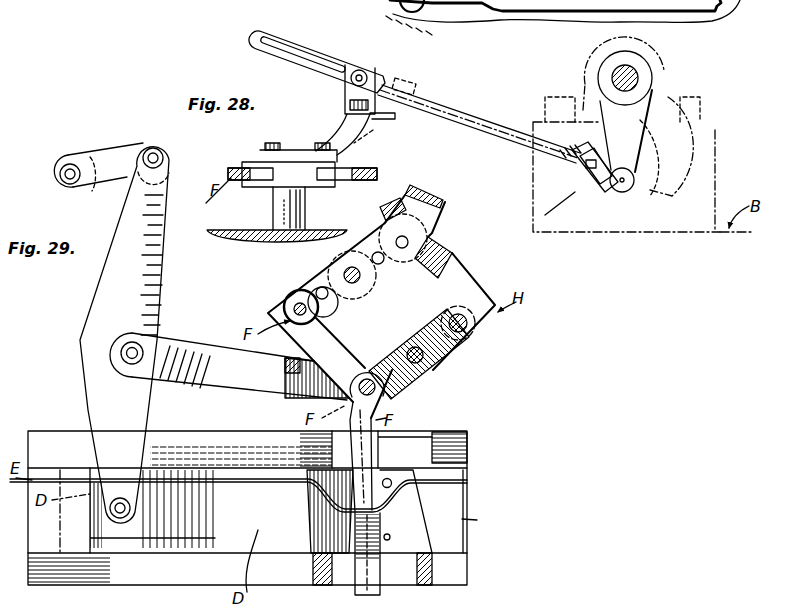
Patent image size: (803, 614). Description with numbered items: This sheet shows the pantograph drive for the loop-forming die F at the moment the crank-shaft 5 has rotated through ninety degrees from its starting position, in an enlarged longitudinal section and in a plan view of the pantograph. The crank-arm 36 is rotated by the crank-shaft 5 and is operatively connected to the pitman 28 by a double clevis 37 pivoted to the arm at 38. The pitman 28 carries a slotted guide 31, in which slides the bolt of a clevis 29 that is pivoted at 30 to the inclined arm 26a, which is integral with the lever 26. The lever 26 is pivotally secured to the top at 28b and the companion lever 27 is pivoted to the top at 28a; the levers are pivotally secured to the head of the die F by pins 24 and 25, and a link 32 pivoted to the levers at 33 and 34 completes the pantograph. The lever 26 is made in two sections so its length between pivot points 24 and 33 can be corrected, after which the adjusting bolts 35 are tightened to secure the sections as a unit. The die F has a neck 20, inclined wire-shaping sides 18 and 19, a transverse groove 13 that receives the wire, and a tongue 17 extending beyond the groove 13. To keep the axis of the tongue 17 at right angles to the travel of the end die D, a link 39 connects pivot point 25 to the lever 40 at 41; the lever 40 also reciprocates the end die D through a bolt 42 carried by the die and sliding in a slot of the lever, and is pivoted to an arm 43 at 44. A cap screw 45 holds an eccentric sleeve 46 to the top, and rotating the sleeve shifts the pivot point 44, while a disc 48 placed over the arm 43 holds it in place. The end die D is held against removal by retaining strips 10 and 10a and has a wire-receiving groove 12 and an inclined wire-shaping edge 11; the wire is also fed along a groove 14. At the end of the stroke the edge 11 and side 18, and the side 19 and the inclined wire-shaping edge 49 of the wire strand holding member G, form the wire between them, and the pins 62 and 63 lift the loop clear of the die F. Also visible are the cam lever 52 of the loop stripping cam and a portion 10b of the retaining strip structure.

In FIG. 28, the crank-shaft 5 is at (611, 75).
In FIG. 29, the retaining strip 10 is at (42, 431).
In FIG. 29, the retaining strip 10a is at (88, 582).
In FIG. 29, the base portion 10b is at (200, 606).
In FIG. 29, the inclined wire-shaping edge 11 is at (302, 500).
In FIG. 29, the wire-receiving groove 12 is at (242, 483).
In FIG. 29, the groove 13 is at (382, 506).
In FIG. 29, the groove 14 is at (462, 479).
In FIG. 29, the tongue 17 is at (379, 579).
In FIG. 29, the inclined wire-shaping side 18 is at (348, 468).
In FIG. 29, the inclined wire-shaping side 19 is at (368, 454).
In FIG. 29, the neck 20 is at (394, 420).
In FIG. 29, the pin 24 is at (296, 305).
In FIG. 29, the pin 25 is at (365, 372).
In FIG. 28, the lever 26 is at (270, 189).
In FIG. 29, the lever 26 is at (385, 268).
In FIG. 28, the arm 26a is at (351, 146).
In FIG. 29, the arm 26a is at (428, 213).
In FIG. 29, the lever 27 is at (394, 394).
In FIG. 28, the pitman 28 is at (492, 84).
In FIG. 29, the pivot 28a is at (437, 373).
In FIG. 28, the pivot 28b is at (277, 236).
In FIG. 29, the pivot 28b is at (334, 265).
In FIG. 28, the clevis 29 is at (344, 96).
In FIG. 28, the pivot 30 is at (383, 101).
In FIG. 28, the slotted guide 31 is at (328, 66).
In FIG. 28, the link 32 is at (368, 182).
In FIG. 29, the link 32 is at (471, 271).
In FIG. 29, the pivot 33 is at (408, 242).
In FIG. 29, the pivot 34 is at (470, 326).
In FIG. 29, the adjusting bolts 35 is at (329, 297).
In FIG. 28, the crank-arm 36 is at (664, 144).
In FIG. 28, the double clevis 37 is at (582, 198).
In FIG. 28, the pivot 38 is at (362, 70).
In FIG. 29, the link 39 is at (242, 381).
In FIG. 29, the lever 40 is at (100, 278).
In FIG. 29, the pivot 41 is at (141, 351).
In FIG. 29, the bolt 42 is at (117, 493).
In FIG. 29, the arm 43 is at (105, 180).
In FIG. 29, the pivot 44 is at (170, 161).
In FIG. 29, the cap screw 45 is at (61, 175).
In FIG. 29, the eccentric sleeve 46 is at (91, 157).
In FIG. 29, the disc 48 is at (64, 186).
In FIG. 29, the inclined wire-shaping edge 49 is at (391, 539).
In FIG. 28, the lever 52 is at (598, 10).
In FIG. 29, the pin 62 is at (390, 480).
In FIG. 29, the pin 63 is at (389, 534).
In FIG. 29, the wire strand holding member G is at (435, 511).